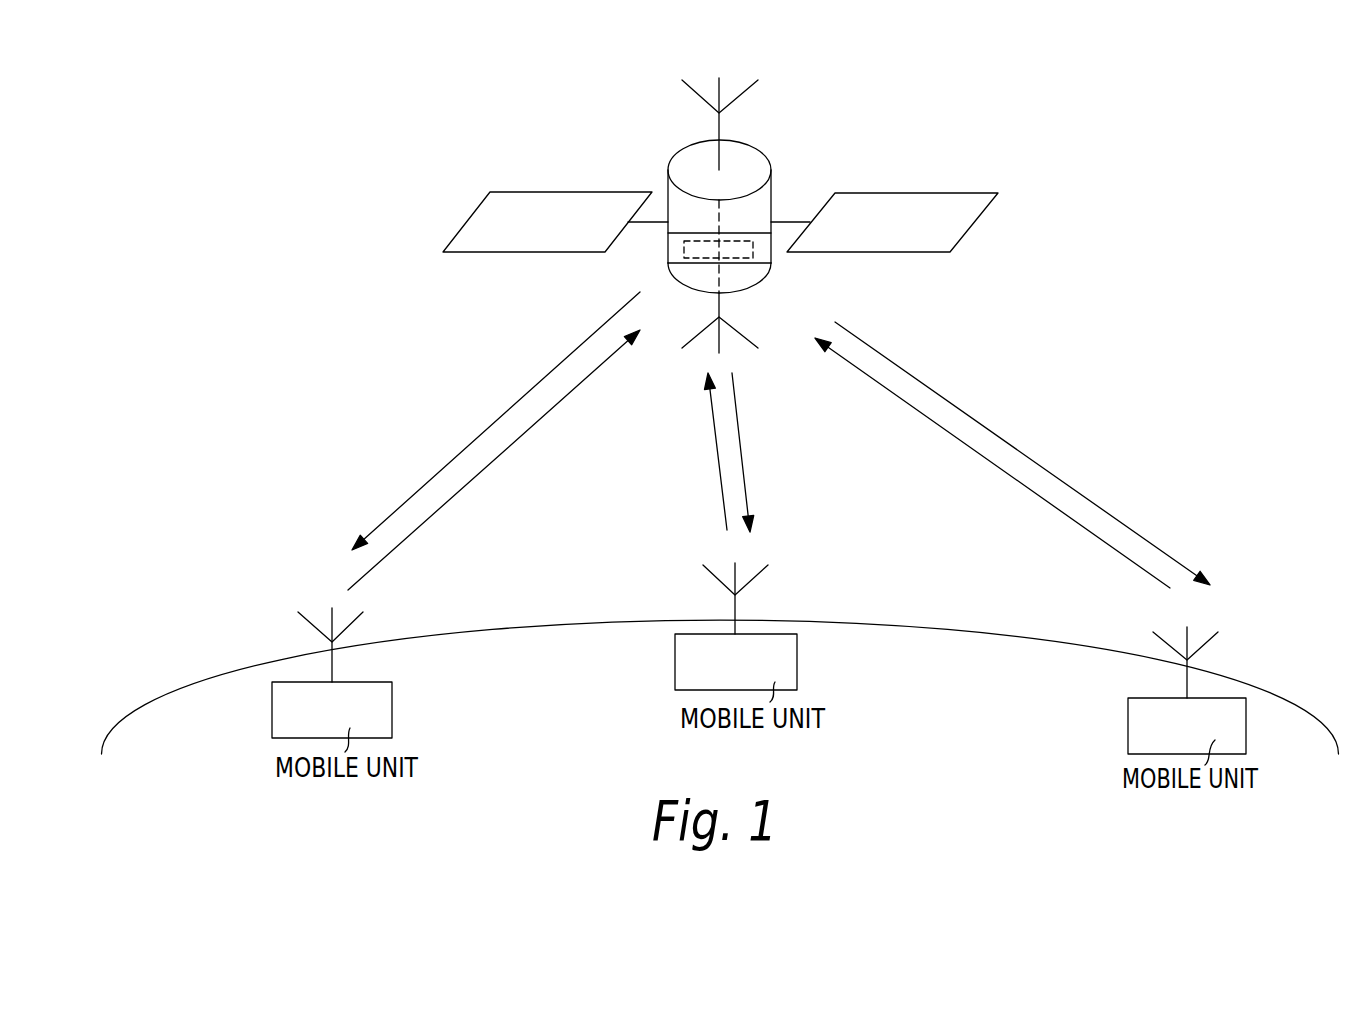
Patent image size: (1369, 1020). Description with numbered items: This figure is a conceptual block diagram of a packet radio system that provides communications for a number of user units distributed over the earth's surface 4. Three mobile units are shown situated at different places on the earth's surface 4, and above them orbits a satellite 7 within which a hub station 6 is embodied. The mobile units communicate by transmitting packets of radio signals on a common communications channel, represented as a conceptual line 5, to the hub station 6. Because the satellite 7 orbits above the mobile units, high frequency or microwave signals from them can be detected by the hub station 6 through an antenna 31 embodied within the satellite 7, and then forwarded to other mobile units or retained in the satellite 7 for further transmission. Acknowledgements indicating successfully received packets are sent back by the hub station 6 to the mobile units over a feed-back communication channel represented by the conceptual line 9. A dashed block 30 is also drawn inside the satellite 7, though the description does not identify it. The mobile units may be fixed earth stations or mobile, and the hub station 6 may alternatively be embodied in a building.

The earth's surface 4 is at (497, 629).
The common communications channel 5 is at (542, 417).
The hub station 6 is at (760, 258).
The satellite 7 is at (747, 168).
The feed-back communication channel 9 is at (465, 449).
The processing unit 30 is at (683, 251).
The antenna 31 is at (743, 82).